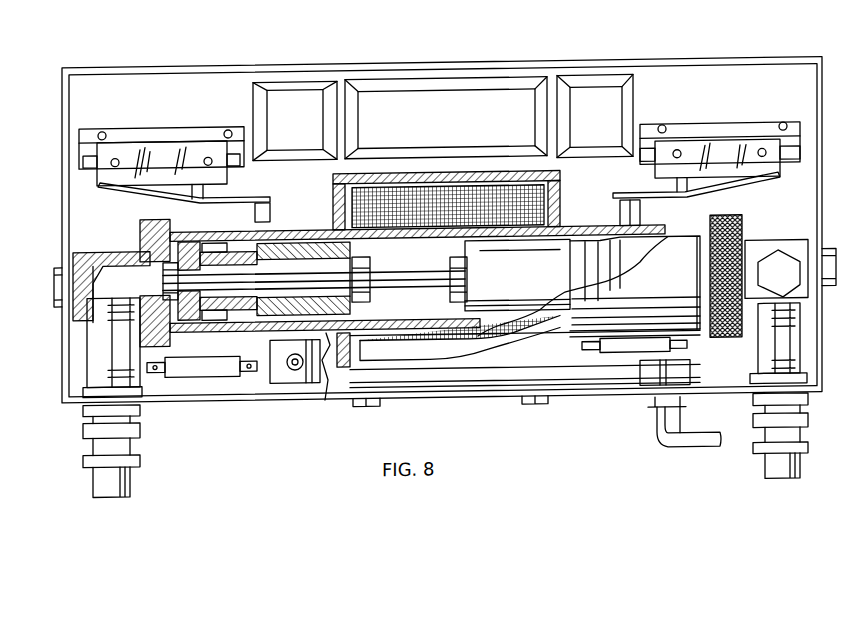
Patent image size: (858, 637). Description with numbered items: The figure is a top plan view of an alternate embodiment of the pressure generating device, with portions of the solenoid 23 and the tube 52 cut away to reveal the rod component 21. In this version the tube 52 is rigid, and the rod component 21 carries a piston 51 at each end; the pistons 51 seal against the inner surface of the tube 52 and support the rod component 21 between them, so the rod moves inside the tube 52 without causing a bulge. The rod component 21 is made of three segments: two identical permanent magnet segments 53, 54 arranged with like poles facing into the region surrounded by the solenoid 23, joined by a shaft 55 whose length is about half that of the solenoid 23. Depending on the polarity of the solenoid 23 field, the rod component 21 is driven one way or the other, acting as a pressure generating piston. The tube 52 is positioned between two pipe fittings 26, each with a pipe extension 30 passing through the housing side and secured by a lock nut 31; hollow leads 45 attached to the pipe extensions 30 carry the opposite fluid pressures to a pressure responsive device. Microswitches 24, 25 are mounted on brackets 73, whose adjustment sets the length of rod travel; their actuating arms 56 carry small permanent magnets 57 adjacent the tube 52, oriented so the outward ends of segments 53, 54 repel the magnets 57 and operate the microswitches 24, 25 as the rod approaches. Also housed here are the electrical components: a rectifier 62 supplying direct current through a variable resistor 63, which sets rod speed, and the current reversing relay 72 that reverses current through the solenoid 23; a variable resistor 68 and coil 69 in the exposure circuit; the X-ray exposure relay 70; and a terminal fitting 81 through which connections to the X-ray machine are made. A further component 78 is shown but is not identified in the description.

The rod component 21 is at (280, 317).
The solenoid 23 is at (386, 176).
The microswitch 24 is at (152, 156).
The microswitch 25 is at (728, 150).
The pipe fitting 26 is at (72, 298).
The pipe extension 30 is at (100, 348).
The lock nut 31 is at (84, 406).
The hollow lead 45 is at (100, 478).
The piston 51 is at (193, 314).
The tube 52 is at (588, 326).
The permanent magnet segment 53 is at (507, 371).
The permanent magnet segment 54 is at (465, 306).
The shaft 55 is at (408, 288).
The actuating arm 56 is at (110, 194).
The permanent magnet 57 is at (272, 208).
The rectifier 62 is at (292, 378).
The variable resistor 63 is at (205, 379).
The variable resistor 68 is at (628, 353).
The coil 69 is at (590, 98).
The X-ray exposure relay 70 is at (293, 96).
The current reversing relay 72 is at (452, 101).
The bracket 73 is at (192, 134).
The hex nut 78 is at (783, 277).
The terminal fitting 81 is at (653, 384).